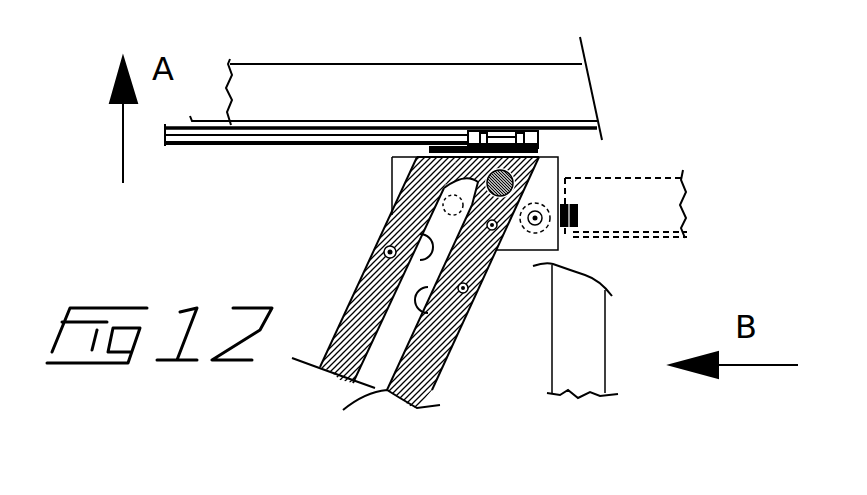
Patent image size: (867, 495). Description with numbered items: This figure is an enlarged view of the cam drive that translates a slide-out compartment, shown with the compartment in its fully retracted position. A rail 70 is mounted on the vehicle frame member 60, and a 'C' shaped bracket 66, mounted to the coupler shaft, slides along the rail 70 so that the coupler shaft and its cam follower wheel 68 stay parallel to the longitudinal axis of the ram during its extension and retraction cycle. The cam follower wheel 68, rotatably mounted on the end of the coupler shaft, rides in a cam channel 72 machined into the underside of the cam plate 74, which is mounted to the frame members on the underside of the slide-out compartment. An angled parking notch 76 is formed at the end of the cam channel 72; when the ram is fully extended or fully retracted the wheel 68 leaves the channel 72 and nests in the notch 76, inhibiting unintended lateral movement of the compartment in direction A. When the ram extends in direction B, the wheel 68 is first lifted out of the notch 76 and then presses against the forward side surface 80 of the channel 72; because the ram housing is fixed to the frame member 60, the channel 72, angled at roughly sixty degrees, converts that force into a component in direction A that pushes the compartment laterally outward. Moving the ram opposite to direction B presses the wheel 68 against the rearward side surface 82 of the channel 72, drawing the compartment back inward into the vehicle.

The vehicle frame member 60 is at (318, 93).
The 'C' shaped bracket 66 is at (497, 138).
The cam follower wheel 68 is at (515, 184).
The rail 70 is at (275, 143).
The cam channel 72 is at (382, 363).
The cam plate 74 is at (437, 382).
The angled parking notch 76 is at (467, 177).
The forward side surface 80 is at (420, 234).
The rearward side surface 82 is at (455, 340).